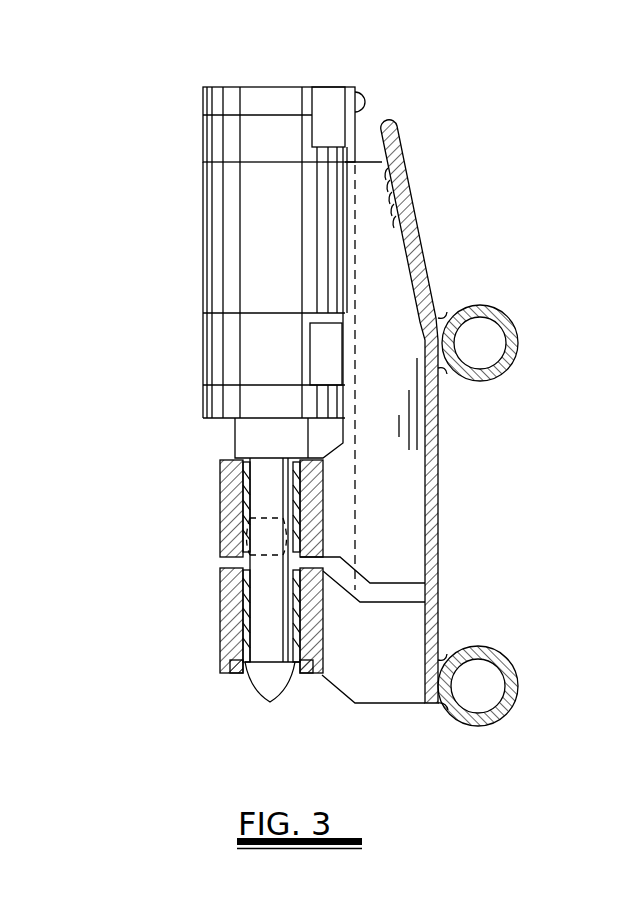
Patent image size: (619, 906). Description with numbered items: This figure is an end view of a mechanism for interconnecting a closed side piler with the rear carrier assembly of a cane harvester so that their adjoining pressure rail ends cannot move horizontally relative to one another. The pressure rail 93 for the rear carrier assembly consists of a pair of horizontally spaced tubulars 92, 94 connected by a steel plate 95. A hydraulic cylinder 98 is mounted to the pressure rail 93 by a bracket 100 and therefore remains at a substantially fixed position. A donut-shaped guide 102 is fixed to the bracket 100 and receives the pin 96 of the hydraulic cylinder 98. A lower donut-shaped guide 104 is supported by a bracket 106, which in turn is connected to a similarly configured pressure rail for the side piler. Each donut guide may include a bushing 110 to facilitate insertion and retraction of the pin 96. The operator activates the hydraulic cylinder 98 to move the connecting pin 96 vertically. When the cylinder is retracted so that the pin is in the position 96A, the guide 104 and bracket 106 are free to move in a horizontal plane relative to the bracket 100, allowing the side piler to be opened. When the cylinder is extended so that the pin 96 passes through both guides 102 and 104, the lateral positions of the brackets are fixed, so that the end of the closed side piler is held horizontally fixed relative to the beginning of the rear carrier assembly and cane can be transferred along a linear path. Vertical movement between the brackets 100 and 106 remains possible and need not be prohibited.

The tubular 92 is at (520, 341).
The pressure rail 93 is at (472, 437).
The tubular 94 is at (517, 697).
The steel plate 95 is at (440, 565).
The pin 96 is at (223, 663).
The retracted pin position 96A is at (220, 548).
The hydraulic cylinder 98 is at (267, 263).
The bracket 100 is at (378, 497).
The donut-shaped guide 102 is at (220, 490).
The lower donut-shaped guide 104 is at (220, 597).
The bracket 106 is at (380, 670).
The bushing 110 is at (233, 530).